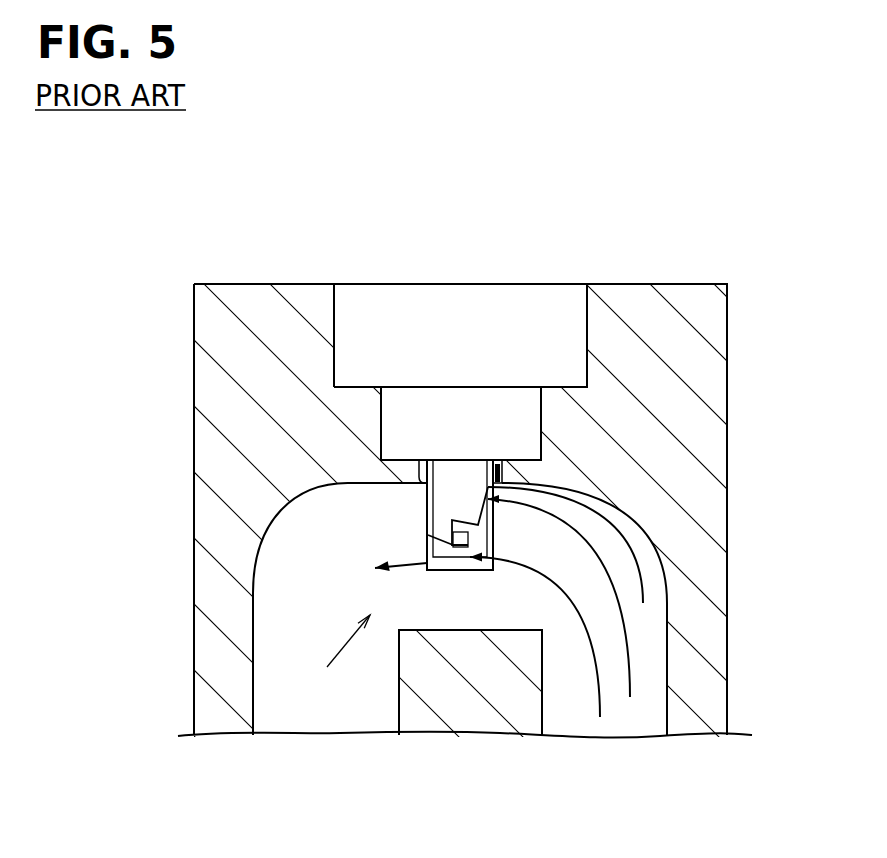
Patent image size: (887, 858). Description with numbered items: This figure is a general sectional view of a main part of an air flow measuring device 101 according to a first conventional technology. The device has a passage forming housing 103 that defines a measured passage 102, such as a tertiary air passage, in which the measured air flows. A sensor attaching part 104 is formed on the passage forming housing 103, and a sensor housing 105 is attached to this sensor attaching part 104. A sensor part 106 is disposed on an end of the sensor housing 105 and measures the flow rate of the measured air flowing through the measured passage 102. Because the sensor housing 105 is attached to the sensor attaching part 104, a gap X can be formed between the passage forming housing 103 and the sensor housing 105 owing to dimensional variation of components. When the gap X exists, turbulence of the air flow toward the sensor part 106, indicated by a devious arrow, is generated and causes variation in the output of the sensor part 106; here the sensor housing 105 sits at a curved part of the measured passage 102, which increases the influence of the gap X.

The air flow measuring device 101 is at (705, 257).
The measured passage 102 is at (590, 693).
The passage forming housing 103 is at (268, 310).
The sensor attaching part 104 is at (427, 478).
The sensor housing 105 is at (400, 310).
The sensor part 106 is at (462, 547).
The gap X is at (500, 500).